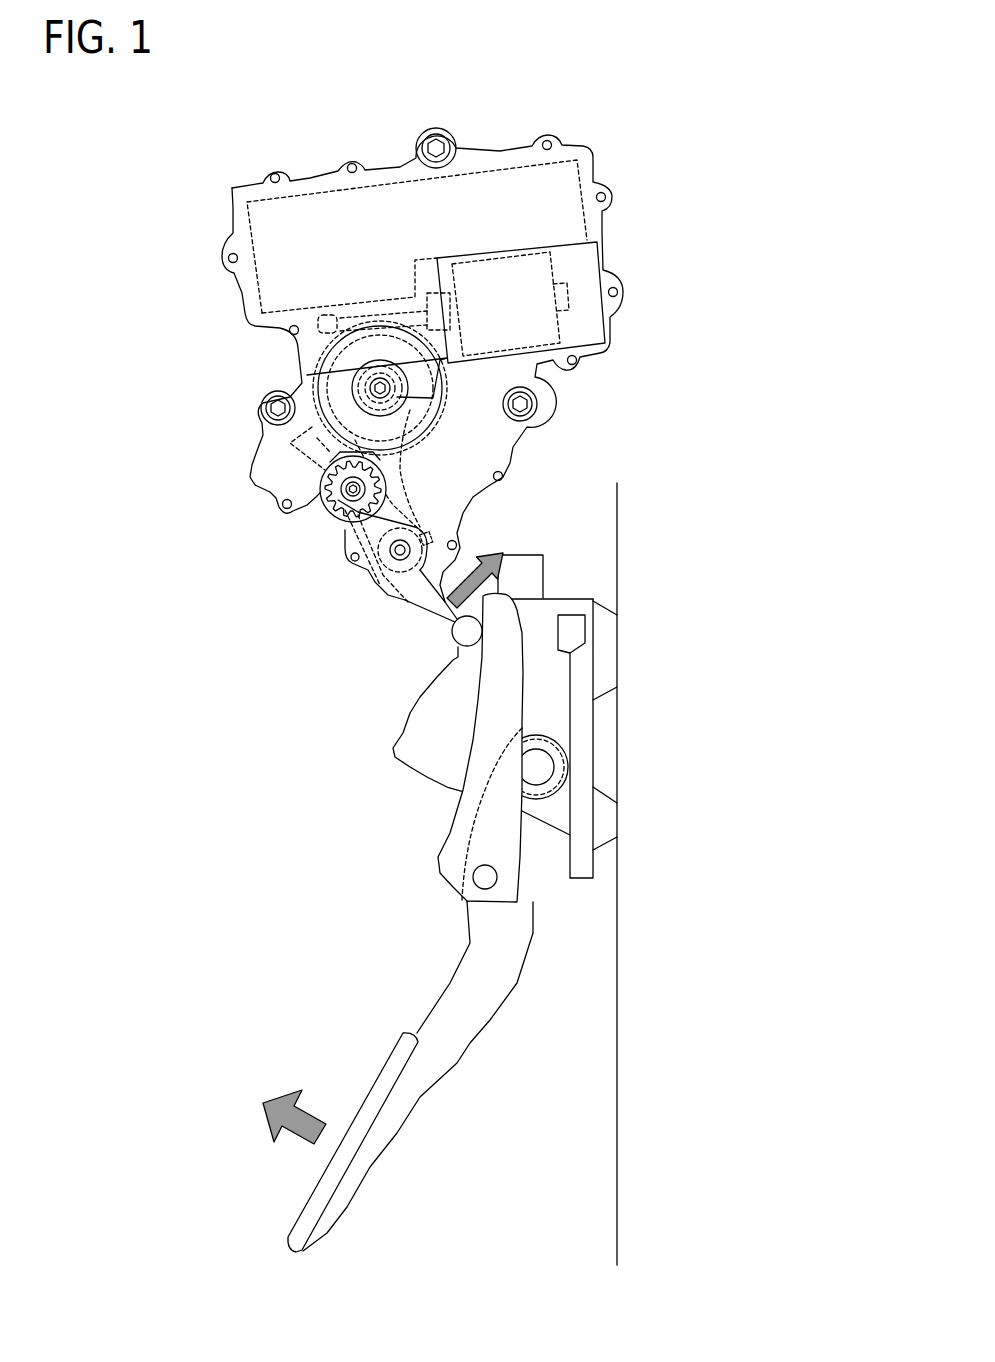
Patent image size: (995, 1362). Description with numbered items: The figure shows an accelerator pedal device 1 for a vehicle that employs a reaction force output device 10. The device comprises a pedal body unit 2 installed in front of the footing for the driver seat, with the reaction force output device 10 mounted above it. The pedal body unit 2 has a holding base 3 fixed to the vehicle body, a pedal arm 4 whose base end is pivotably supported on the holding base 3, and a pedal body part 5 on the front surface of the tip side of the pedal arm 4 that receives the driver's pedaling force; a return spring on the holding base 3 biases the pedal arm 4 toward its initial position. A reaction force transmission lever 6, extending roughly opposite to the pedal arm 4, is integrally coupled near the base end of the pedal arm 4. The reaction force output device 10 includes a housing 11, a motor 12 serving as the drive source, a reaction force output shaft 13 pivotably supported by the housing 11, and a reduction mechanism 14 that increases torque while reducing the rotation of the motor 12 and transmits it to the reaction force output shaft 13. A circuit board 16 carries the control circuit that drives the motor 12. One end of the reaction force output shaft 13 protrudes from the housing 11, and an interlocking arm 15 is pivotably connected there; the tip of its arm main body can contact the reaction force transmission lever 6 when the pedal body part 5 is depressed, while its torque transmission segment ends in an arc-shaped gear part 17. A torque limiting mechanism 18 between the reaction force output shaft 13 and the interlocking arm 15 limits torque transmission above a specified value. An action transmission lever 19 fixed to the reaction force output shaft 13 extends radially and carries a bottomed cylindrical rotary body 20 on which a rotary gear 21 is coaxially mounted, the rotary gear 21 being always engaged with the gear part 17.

The accelerator pedal device 1 is at (640, 140).
The pedal body unit 2 is at (578, 588).
The holding base 3 is at (585, 680).
The pedal arm 4 is at (483, 990).
The pedal body part 5 is at (365, 1098).
The reaction force transmission lever 6 is at (492, 731).
The reaction force output device 10 is at (618, 266).
The housing 11 is at (593, 219).
The motor 12 is at (578, 328).
The reaction force output shaft 13 is at (398, 563).
The reduction mechanism 14 is at (316, 344).
The interlocking arm 15 is at (410, 582).
The circuit board 16 is at (313, 186).
The gear part 17 is at (347, 541).
The torque limiting mechanism 18 is at (302, 478).
The action transmission lever 19 is at (400, 512).
The rotary body 20 is at (346, 490).
The rotary gear 21 is at (336, 496).